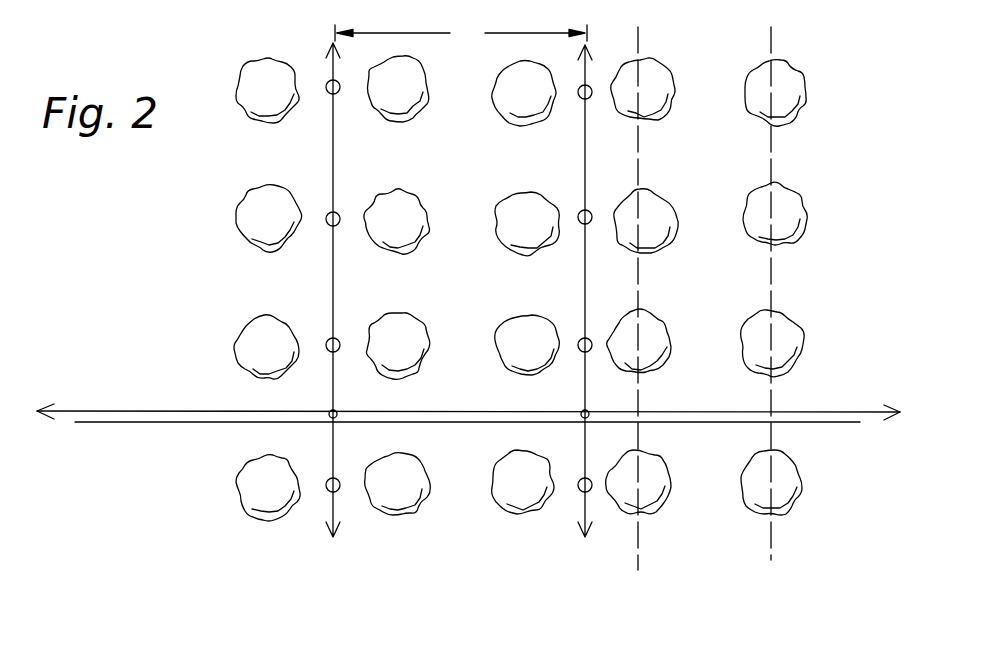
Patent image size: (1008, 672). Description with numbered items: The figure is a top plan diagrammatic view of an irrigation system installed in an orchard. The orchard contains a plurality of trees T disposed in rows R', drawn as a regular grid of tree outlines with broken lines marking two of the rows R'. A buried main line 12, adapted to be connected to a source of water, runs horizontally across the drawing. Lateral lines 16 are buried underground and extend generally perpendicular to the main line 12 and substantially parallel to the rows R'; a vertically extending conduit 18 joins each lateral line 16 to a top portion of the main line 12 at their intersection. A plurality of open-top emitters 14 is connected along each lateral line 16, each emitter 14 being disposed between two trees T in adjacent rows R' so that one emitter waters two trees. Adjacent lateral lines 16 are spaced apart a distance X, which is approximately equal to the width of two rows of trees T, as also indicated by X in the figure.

The main line 12 is at (185, 423).
The open-top emitter 14 is at (580, 98).
The lateral line 16 is at (336, 286).
The vertically extending conduit 18 is at (388, 396).
The tree T is at (255, 328).
The tree row R' is at (698, 313).
The lateral line spacing distance X is at (461, 34).